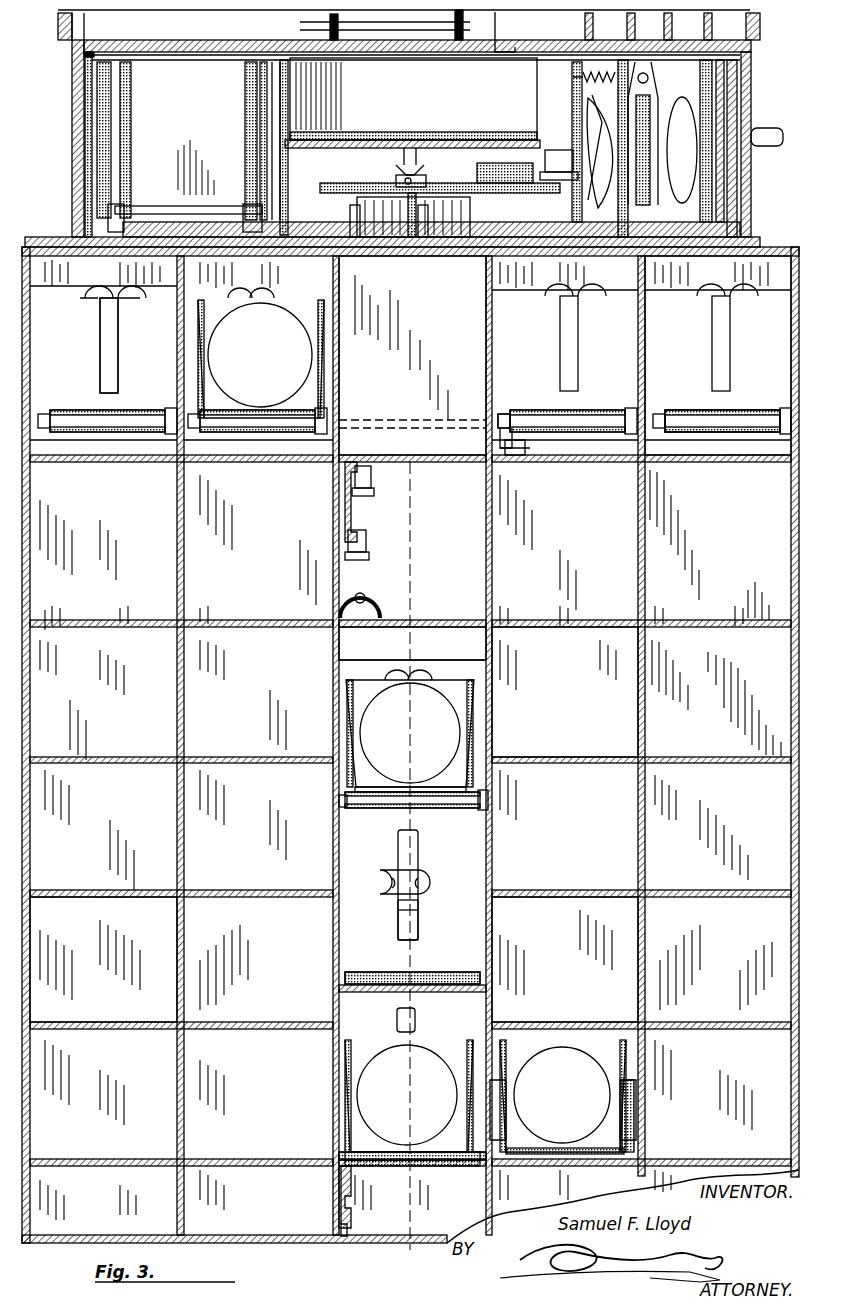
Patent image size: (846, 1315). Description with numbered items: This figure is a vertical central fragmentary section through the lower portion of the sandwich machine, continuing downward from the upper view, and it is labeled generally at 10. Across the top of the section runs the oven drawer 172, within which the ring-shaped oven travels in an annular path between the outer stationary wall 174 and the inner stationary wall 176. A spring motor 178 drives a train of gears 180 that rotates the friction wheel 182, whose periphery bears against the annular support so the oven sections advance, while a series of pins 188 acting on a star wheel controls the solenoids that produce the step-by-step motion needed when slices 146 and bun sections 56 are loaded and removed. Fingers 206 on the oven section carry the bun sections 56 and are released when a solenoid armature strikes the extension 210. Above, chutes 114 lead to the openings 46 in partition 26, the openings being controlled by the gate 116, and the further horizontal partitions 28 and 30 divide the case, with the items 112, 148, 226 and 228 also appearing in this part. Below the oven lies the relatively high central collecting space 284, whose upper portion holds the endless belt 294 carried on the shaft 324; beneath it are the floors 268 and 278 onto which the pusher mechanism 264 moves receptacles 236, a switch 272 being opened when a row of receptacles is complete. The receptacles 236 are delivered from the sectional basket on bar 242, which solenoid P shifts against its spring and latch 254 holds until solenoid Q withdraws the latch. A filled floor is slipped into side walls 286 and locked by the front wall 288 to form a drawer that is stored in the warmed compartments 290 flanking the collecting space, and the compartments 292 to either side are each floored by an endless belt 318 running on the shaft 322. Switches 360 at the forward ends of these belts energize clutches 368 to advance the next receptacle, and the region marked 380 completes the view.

The machine housing 10 is at (72, 143).
The horizontal partition 26 is at (90, 48).
The horizontal partition 28 is at (95, 243).
The horizontal partition 30 is at (600, 462).
The openings 46 is at (520, 45).
The bun sections 56 is at (675, 125).
The motor housing 112 is at (408, 146).
The chutes 114 is at (672, 26).
The gate 116 is at (638, 133).
The slices 146 is at (648, 138).
The side plate 148 is at (660, 178).
The drawer 172 is at (752, 228).
The outer stationary wall 174 is at (92, 92).
The inner stationary wall 176 is at (540, 79).
The spring motor 178 is at (412, 355).
The train of gears 180 is at (470, 193).
The friction wheel 182 is at (488, 165).
The pins 188 is at (262, 142).
The fingers 206 is at (601, 151).
The extension 210 is at (560, 148).
The plunger guide 226 is at (120, 262).
The cross rail 228 is at (240, 210).
The receptacles 236 is at (310, 345).
The bar 242 is at (360, 488).
The latch 254 is at (364, 503).
The pusher mechanism 264 is at (340, 1180).
The floor 268 is at (458, 972).
The switch 272 is at (420, 908).
The floor 278 is at (375, 972).
The collecting space 284 is at (436, 920).
The side walls 286 is at (512, 1090).
The front wall 288 is at (628, 1100).
The warmed compartments 290 is at (334, 959).
The compartments 292 is at (718, 355).
The belt 294 is at (486, 760).
The endless belt 318 is at (750, 412).
The shaft 322 is at (520, 410).
The shaft 324 is at (488, 797).
The switches 360 is at (118, 350).
The clutch 368 is at (42, 414).
The compartment 380 is at (420, 668).
The solenoid P is at (378, 590).
The solenoid Q is at (366, 540).